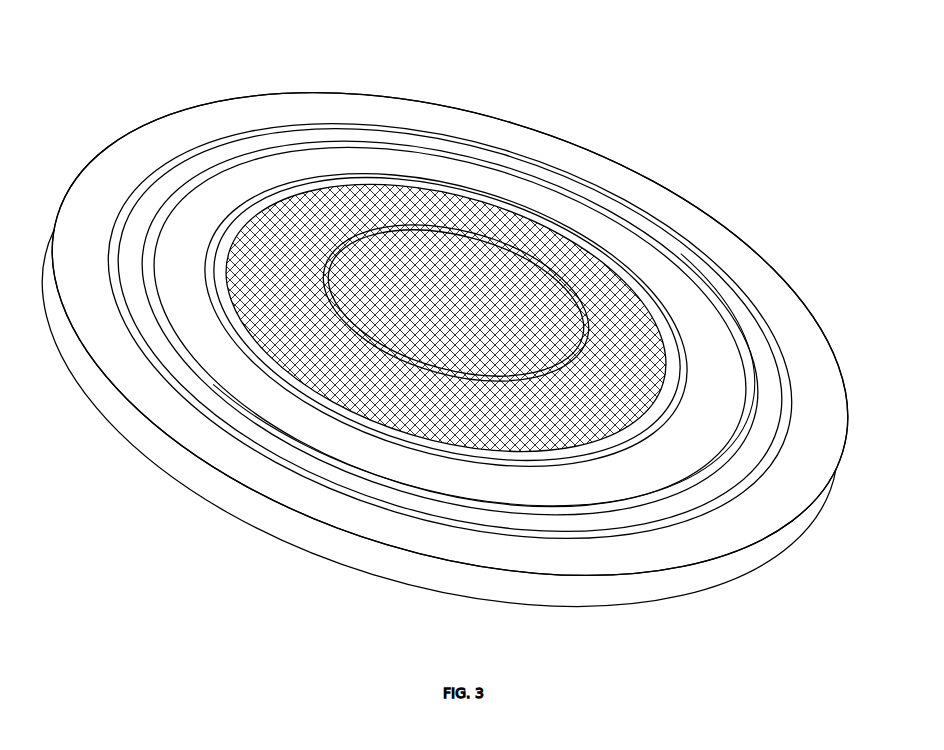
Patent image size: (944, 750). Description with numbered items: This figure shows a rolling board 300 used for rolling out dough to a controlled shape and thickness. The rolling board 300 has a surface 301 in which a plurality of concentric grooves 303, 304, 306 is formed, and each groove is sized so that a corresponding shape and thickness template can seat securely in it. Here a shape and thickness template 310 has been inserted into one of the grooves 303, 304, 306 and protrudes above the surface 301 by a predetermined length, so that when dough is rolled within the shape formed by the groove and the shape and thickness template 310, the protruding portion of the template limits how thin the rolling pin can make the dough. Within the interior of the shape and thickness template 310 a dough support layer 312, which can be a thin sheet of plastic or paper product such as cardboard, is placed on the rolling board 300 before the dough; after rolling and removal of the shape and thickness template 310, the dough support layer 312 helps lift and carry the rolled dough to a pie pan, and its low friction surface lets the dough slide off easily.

The rolling board 300 is at (293, 93).
The surface 301 is at (230, 115).
The groove 303 is at (275, 131).
The groove 304 is at (170, 217).
The groove 306 is at (513, 383).
The shape and thickness template 310 is at (313, 181).
The dough support layer 312 is at (639, 320).